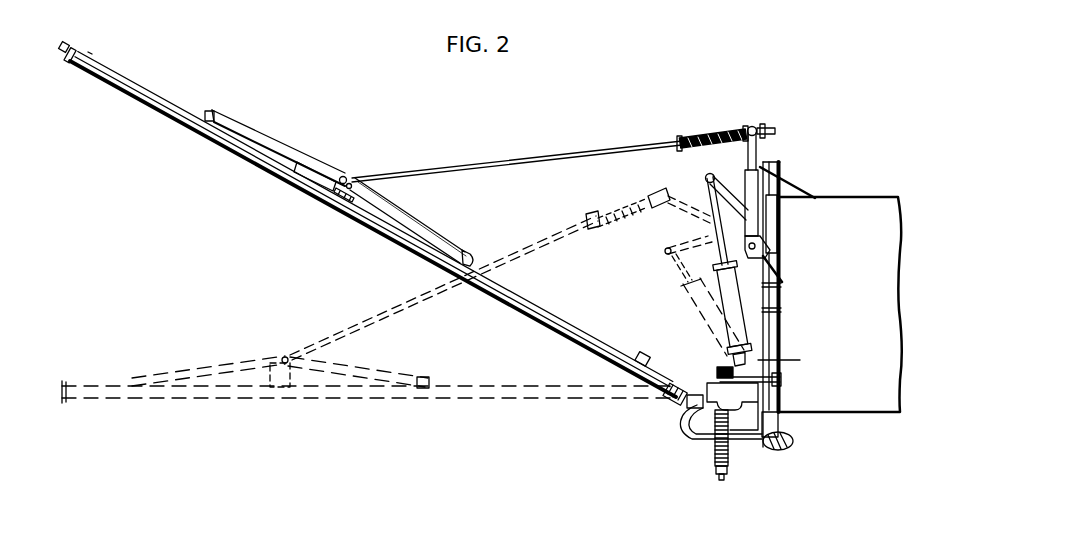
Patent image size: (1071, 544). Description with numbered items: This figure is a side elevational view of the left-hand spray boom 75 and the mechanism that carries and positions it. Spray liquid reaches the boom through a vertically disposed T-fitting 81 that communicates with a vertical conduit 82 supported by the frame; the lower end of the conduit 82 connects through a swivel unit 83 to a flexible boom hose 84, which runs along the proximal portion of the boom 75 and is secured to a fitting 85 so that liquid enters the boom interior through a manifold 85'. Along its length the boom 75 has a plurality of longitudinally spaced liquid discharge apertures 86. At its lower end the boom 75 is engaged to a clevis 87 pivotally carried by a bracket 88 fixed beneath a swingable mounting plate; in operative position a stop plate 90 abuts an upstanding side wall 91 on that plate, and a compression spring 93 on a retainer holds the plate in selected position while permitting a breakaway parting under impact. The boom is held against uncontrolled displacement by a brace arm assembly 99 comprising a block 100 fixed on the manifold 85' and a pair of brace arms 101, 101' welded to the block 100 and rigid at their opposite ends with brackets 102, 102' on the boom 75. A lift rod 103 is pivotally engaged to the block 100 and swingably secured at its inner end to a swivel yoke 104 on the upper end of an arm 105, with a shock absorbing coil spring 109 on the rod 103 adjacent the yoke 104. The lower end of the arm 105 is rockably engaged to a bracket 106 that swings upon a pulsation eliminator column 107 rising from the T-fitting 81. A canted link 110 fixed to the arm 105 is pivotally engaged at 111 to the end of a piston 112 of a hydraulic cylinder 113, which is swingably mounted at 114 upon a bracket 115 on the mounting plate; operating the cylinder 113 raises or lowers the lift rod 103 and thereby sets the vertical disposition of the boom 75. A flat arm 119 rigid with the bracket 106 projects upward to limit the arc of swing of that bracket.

The spray boom 75 is at (574, 328).
The T-fitting 81 is at (782, 314).
The vertical conduit 82 is at (775, 350).
The swivel unit 83 is at (772, 450).
The boom hose 84 is at (740, 438).
The fitting 85 is at (635, 341).
The manifold 85' is at (343, 162).
The liquid discharge apertures 86 is at (270, 165).
The clevis 87 is at (687, 385).
The bracket 88 is at (690, 425).
The stop plate 90 is at (783, 408).
The upstanding side wall 91 is at (730, 367).
The compression spring 93 is at (714, 455).
The brace arm assembly 99 is at (457, 235).
The block 100 is at (346, 177).
The brace arm 101 is at (278, 135).
The brace arm 101' is at (426, 220).
The bracket 102 is at (207, 92).
The bracket 102' is at (491, 246).
The lift rod 103 is at (514, 159).
The swivel yoke 104 is at (754, 153).
The arm 105 is at (778, 170).
The bracket 106 is at (777, 268).
The pulsation eliminator column 107 is at (783, 285).
The shock absorbing coil spring 109 is at (707, 132).
The link 110 is at (752, 213).
The pivot 111 is at (706, 177).
The piston 112 is at (722, 213).
The hydraulic cylinder 113 is at (722, 296).
The swingable mounting 114 is at (768, 358).
The bracket 115 is at (783, 378).
The flat arm 119 is at (772, 245).